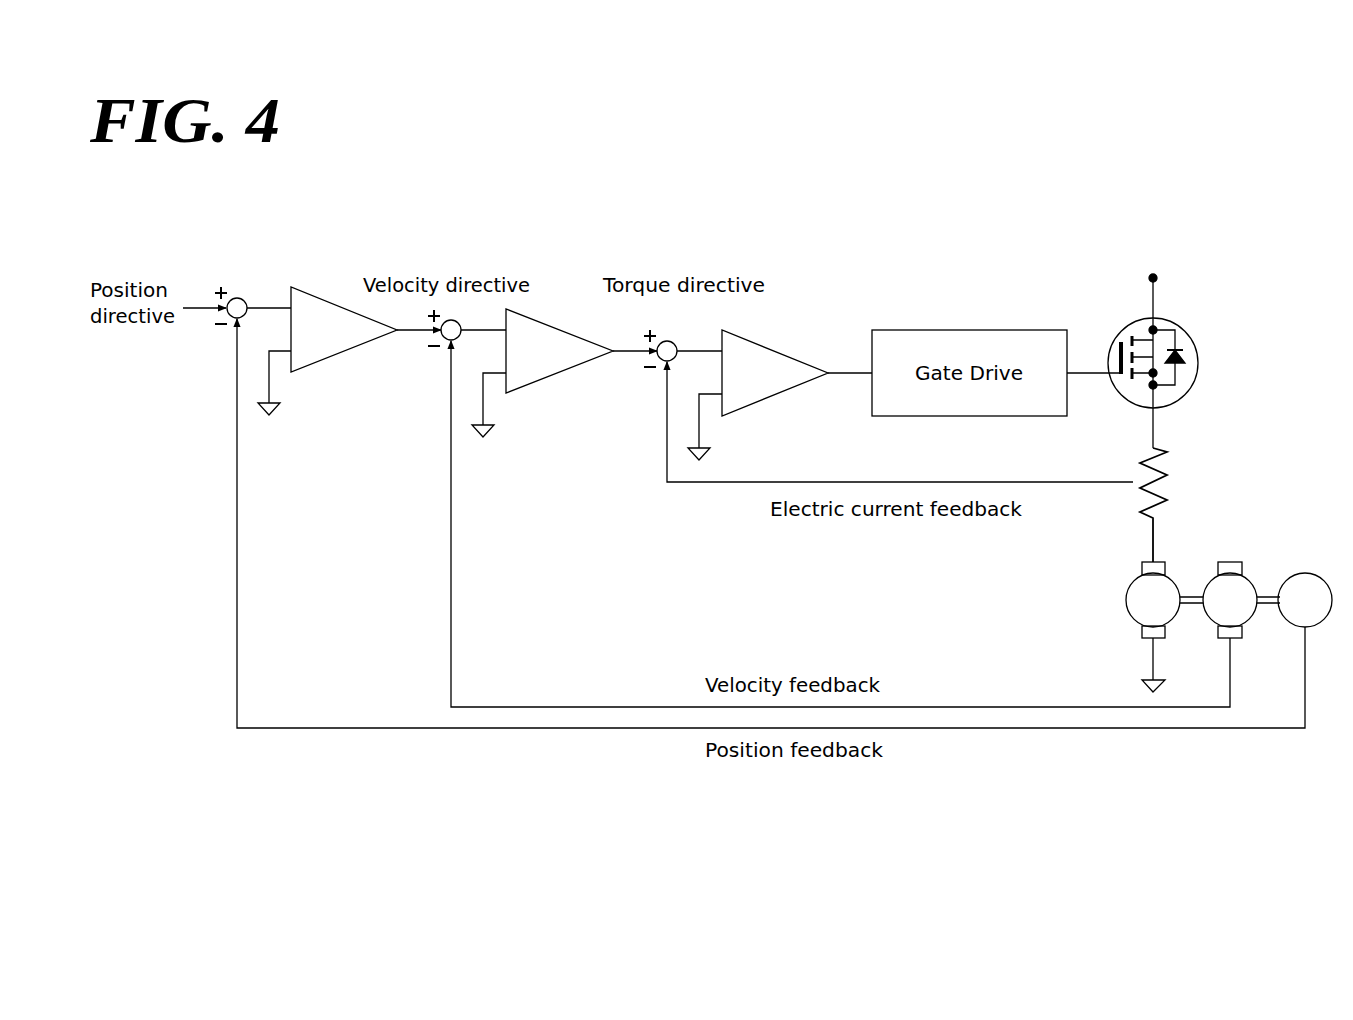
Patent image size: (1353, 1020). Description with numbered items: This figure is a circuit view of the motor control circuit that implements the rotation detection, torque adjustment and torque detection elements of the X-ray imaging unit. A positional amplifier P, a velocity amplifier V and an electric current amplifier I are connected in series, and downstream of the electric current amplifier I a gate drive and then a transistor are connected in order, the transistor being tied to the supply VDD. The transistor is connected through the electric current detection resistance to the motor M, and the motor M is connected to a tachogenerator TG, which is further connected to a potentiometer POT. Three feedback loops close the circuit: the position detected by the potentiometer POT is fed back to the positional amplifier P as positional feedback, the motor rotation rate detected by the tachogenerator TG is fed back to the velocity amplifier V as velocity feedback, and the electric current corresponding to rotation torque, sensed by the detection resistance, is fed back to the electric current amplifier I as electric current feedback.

The positional amplifier P is at (327, 351).
The velocity amplifier V is at (542, 373).
The electric current amplifier I is at (758, 395).
The supply voltage VDD is at (1153, 287).
The motor M is at (1153, 627).
The tachogenerator TG is at (1230, 600).
The potentiometer POT is at (1305, 600).